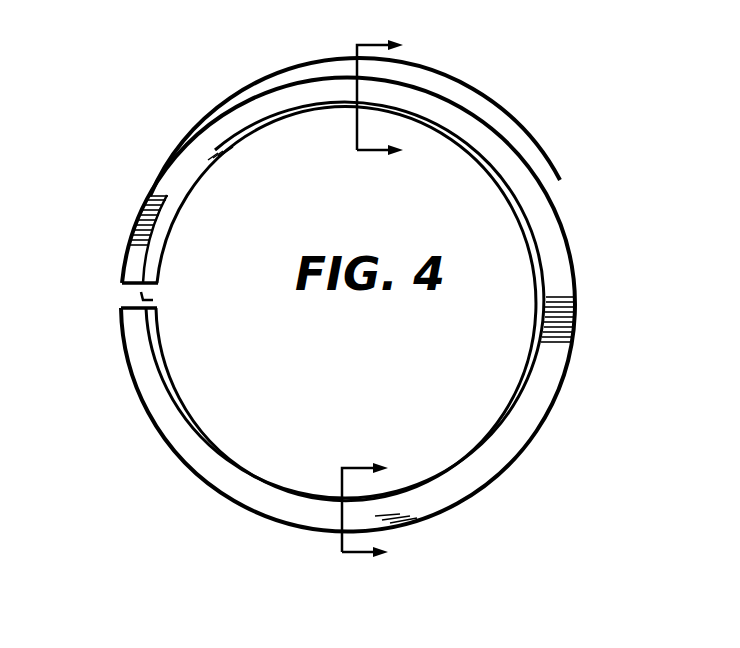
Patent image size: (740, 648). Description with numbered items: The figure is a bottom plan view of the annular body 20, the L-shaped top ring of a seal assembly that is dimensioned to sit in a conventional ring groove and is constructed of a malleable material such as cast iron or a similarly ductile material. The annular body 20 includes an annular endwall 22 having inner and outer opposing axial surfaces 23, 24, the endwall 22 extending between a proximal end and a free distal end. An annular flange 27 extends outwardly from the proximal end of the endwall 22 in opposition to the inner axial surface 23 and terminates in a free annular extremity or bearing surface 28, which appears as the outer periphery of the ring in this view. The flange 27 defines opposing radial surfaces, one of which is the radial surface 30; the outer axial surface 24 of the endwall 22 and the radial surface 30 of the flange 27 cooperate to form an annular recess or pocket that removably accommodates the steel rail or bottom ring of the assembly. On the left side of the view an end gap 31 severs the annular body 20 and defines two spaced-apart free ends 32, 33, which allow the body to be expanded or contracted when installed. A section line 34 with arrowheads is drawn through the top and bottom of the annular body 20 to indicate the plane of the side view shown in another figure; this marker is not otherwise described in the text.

The annular body 20 is at (207, 123).
The annular endwall 22 is at (213, 157).
The inner axial surface 23 is at (537, 300).
The outer axial surface 24 is at (536, 368).
The annular flange 27 is at (413, 108).
The bearing surface 28 is at (280, 84).
The radial surface 30 is at (510, 425).
The end gap 31 is at (147, 298).
The free end 32 is at (124, 301).
The free end 33 is at (150, 286).
The section line 34 is at (352, 112).